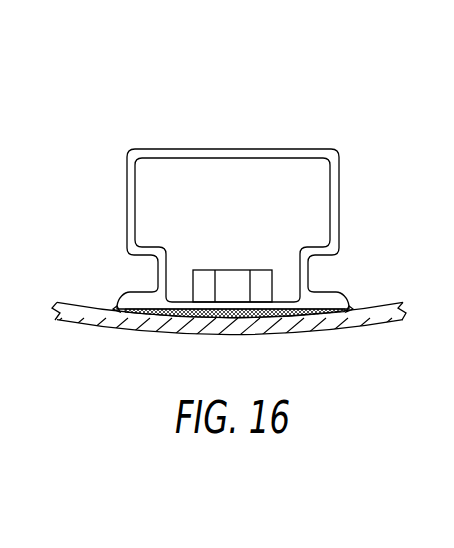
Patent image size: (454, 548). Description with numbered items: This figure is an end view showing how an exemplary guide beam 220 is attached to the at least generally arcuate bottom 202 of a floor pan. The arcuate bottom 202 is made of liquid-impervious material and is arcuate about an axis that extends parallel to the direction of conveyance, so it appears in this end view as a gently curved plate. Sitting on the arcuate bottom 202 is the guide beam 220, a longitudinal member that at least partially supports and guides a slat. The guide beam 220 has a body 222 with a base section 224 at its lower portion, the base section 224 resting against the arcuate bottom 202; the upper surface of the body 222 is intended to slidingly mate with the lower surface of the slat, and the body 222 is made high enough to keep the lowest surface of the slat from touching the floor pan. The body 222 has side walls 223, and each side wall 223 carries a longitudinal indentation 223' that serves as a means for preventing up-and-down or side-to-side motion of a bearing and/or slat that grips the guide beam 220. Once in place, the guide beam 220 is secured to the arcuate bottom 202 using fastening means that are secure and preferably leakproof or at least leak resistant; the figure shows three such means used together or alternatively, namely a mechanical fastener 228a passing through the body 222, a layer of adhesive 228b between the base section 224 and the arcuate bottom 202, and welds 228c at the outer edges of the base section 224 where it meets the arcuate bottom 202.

The arcuate bottom 202 is at (312, 334).
The guide beam 220 is at (283, 149).
The body 222 is at (239, 168).
The side wall 223 is at (97, 202).
The longitudinal indentation 223' is at (100, 262).
The base section 224 is at (320, 297).
The mechanical fastener 228a is at (200, 268).
The adhesive 228b is at (168, 318).
The weld 228c is at (117, 307).